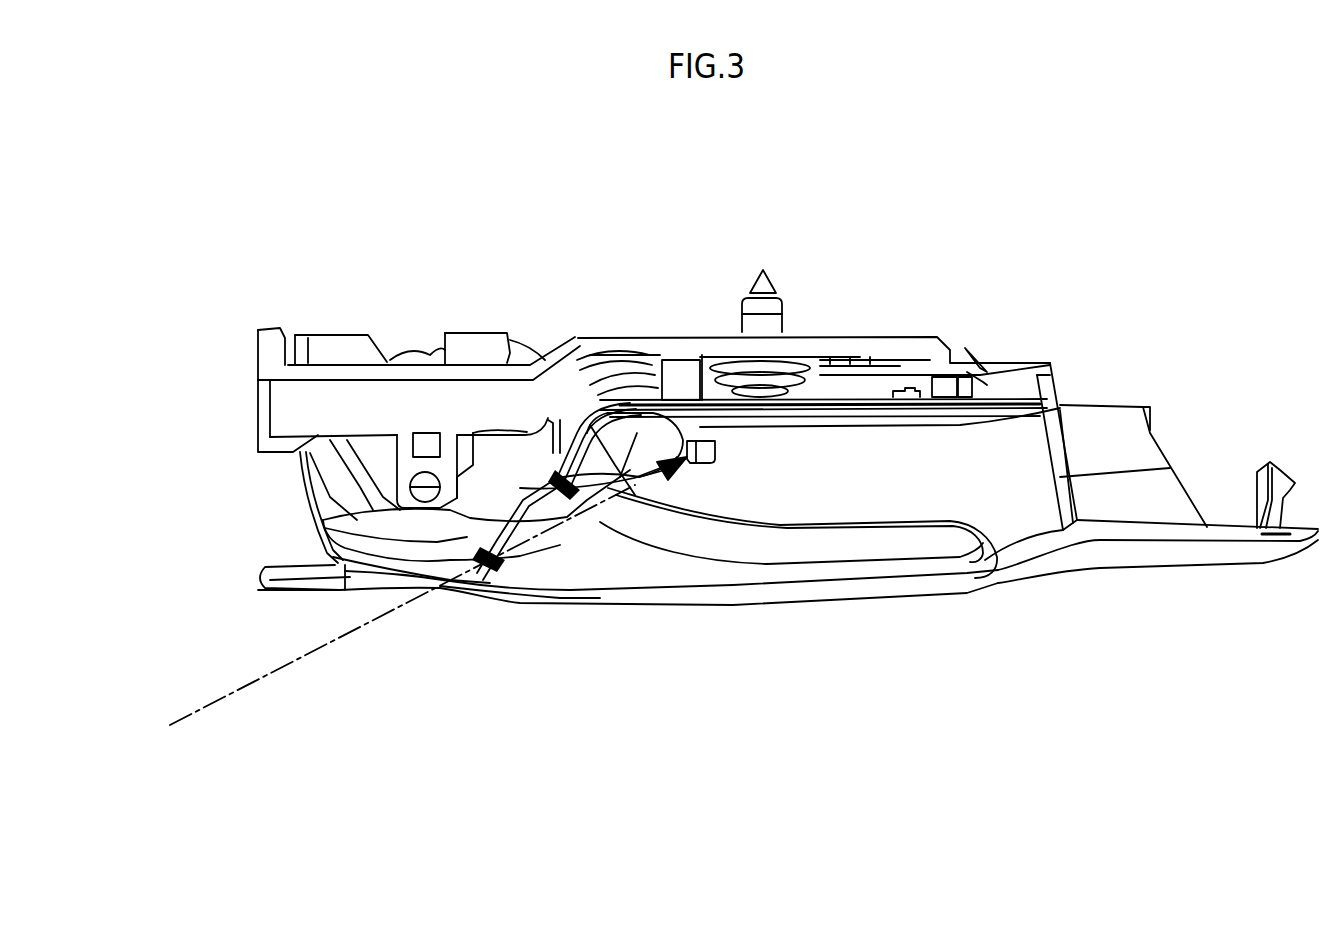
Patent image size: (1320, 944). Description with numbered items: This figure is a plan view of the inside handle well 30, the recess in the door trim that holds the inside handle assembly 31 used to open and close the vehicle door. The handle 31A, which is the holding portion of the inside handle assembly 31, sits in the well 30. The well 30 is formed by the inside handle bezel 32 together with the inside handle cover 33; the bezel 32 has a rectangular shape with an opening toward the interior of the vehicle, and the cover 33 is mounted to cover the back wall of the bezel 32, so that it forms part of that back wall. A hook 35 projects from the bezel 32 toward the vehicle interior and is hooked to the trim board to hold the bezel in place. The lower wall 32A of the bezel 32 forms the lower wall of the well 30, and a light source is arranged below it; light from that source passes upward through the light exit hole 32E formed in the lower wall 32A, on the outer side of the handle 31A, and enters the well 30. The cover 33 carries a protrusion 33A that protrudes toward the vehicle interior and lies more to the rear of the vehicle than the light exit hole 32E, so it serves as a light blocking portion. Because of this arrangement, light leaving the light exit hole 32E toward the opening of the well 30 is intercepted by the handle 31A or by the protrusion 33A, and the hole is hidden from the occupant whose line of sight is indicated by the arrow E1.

The inside handle well 30 is at (343, 328).
The inside handle assembly 31 is at (648, 612).
The handle 31A is at (735, 562).
The inside handle bezel 32 is at (1100, 565).
The lower wall 32A is at (955, 457).
The light exit hole 32E is at (723, 440).
The inside handle cover 33 is at (890, 415).
The protrusion 33A is at (657, 437).
The hook 35 is at (1278, 462).
The arrow indicating line of sight E1 is at (360, 627).